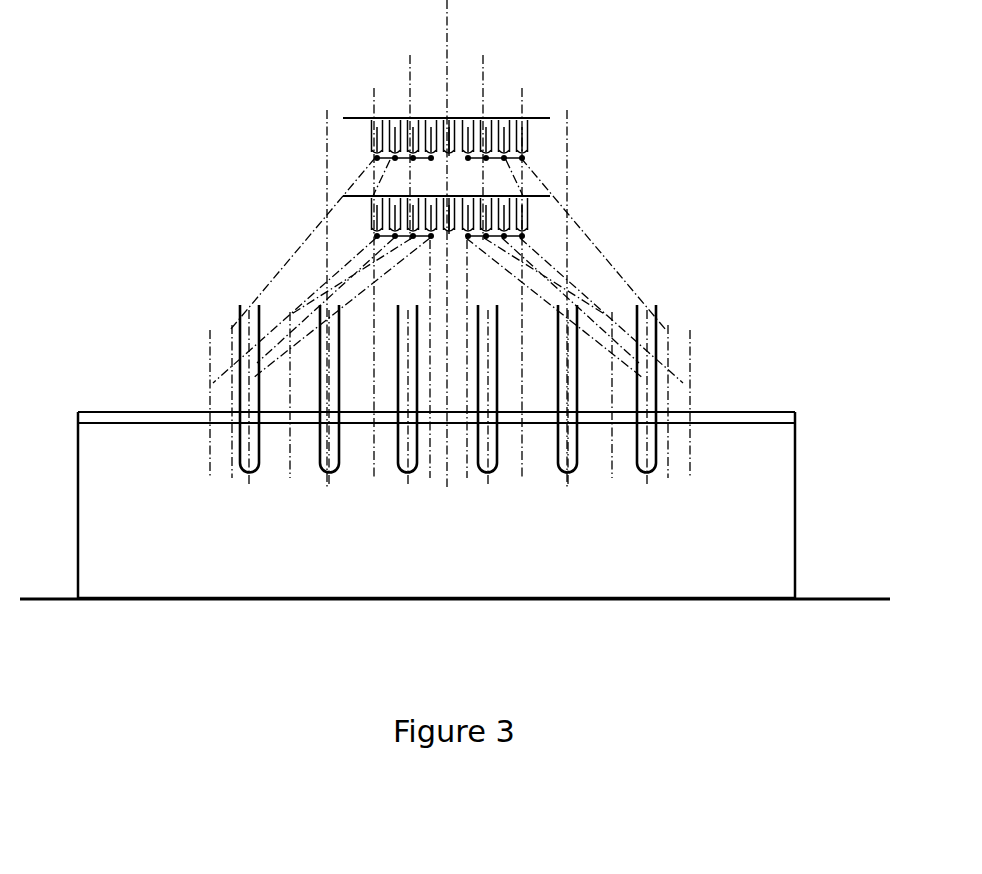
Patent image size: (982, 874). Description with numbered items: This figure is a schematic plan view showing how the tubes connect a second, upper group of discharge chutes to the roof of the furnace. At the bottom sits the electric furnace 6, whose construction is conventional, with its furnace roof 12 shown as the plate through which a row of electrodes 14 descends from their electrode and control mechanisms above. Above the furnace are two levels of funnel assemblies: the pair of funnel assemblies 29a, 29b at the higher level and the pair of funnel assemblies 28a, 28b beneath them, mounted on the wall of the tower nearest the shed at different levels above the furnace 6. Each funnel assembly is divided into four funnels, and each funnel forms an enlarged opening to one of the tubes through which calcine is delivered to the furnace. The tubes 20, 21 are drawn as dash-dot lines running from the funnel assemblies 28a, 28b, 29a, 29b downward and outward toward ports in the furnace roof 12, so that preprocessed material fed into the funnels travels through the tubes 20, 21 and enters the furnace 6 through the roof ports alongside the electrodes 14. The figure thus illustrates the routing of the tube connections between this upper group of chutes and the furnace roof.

The electric furnace 6 is at (797, 500).
The furnace roof 12 is at (753, 412).
The electrodes 14 is at (250, 473).
The tube 20 is at (222, 372).
The tube 21 is at (272, 292).
The funnel assembly 28a is at (368, 218).
The funnel assembly 28b is at (531, 218).
The funnel assembly 29a is at (368, 139).
The funnel assembly 29b is at (502, 118).